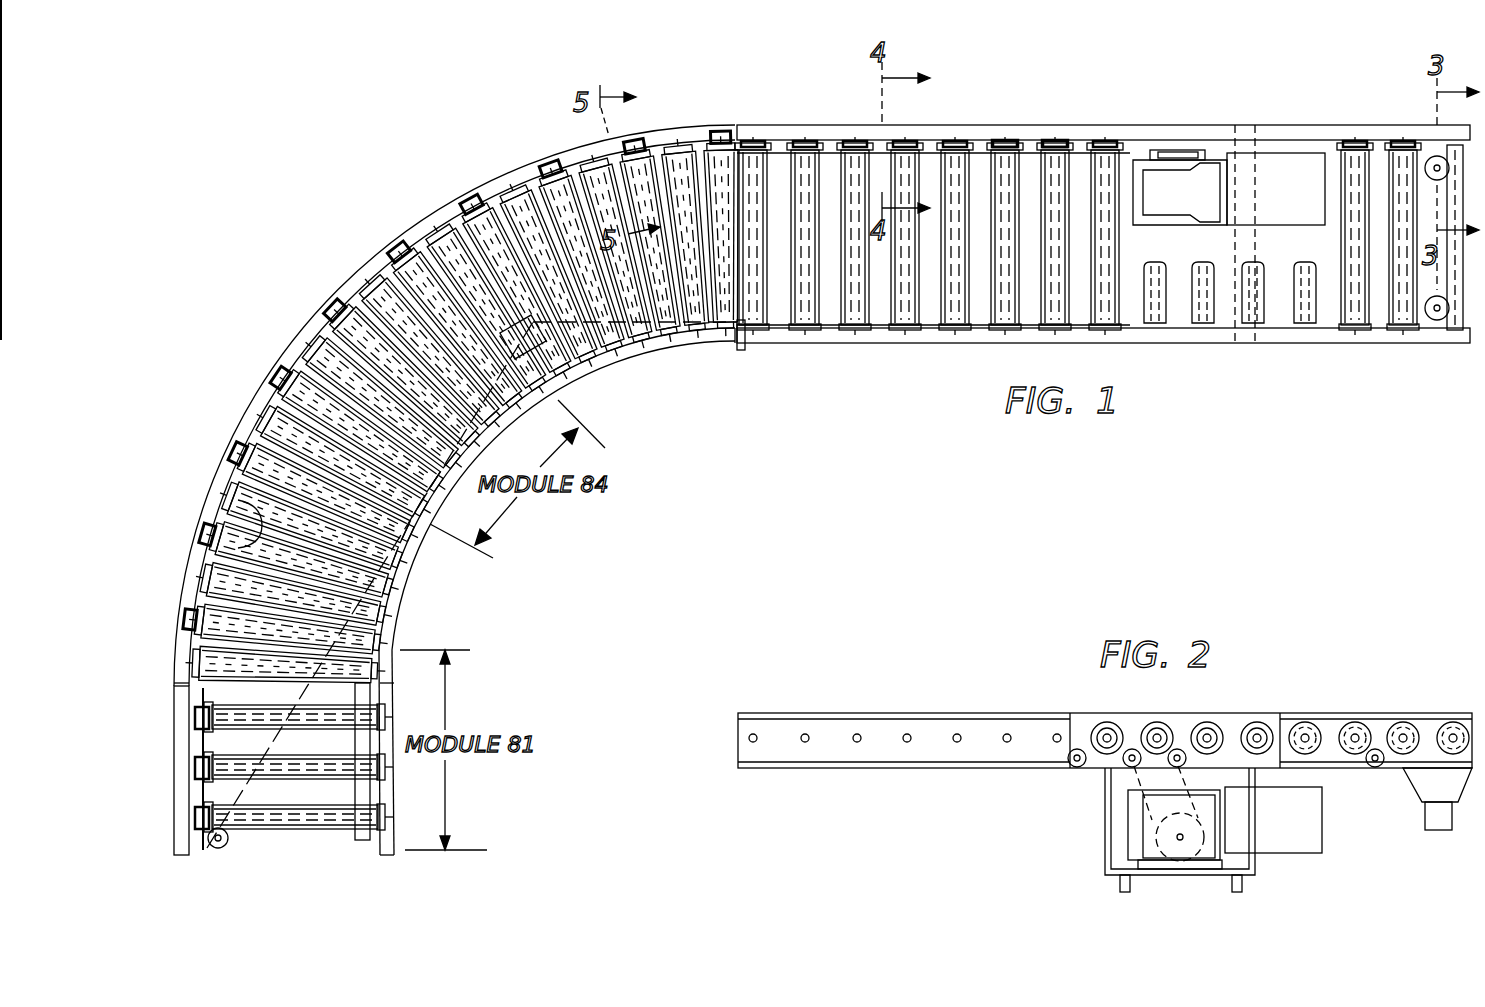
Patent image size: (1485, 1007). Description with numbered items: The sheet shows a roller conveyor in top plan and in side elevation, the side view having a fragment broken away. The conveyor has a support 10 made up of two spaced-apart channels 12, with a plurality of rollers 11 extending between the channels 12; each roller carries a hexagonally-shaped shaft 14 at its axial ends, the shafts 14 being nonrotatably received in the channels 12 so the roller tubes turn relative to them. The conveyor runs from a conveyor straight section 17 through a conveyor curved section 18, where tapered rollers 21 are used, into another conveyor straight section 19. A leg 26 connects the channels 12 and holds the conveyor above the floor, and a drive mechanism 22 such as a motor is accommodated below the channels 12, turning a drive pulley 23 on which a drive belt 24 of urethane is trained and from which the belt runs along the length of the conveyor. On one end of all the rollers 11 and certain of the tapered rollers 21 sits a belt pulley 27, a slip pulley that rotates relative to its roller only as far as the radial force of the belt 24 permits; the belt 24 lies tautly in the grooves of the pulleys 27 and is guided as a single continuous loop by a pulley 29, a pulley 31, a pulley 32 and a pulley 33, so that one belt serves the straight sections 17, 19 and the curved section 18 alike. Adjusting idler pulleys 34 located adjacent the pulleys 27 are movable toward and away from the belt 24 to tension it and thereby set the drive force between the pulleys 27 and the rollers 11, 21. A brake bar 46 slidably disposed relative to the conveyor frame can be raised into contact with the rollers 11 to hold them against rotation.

In FIG. 1, the support 10 is at (733, 346).
In FIG. 1, the rollers 11 is at (1000, 190).
In FIG. 2, the rollers 11 is at (1155, 735).
In FIG. 1, the channels 12 is at (1172, 130).
In FIG. 2, the channels 12 is at (862, 715).
In FIG. 2, the hexagonally-shaped shaft 14 is at (1007, 735).
In FIG. 1, the conveyor straight section 17 is at (810, 343).
In FIG. 1, the conveyor curved section 18 is at (292, 342).
In FIG. 1, the conveyor straight section 19 is at (175, 707).
In FIG. 1, the tapered rollers 21 is at (500, 205).
In FIG. 1, the drive mechanism 22 is at (1280, 165).
In FIG. 2, the drive mechanism 22 is at (1290, 843).
In FIG. 2, the drive pulley 23 is at (1162, 852).
In FIG. 1, the drive belt 24 is at (930, 328).
In FIG. 2, the drive belt 24 is at (1240, 745).
In FIG. 2, the leg 26 is at (1430, 812).
In FIG. 2, the belt pulley 27 is at (1102, 725).
In FIG. 1, the pulley 29 is at (1437, 156).
In FIG. 1, the pulley 31 is at (1432, 320).
In FIG. 1, the pulley 32 is at (560, 346).
In FIG. 1, the pulley 33 is at (226, 843).
In FIG. 1, the idler pulleys 34 is at (1062, 143).
In FIG. 2, the idler pulleys 34 is at (1074, 767).
In FIG. 1, the brake bar 46 is at (368, 785).